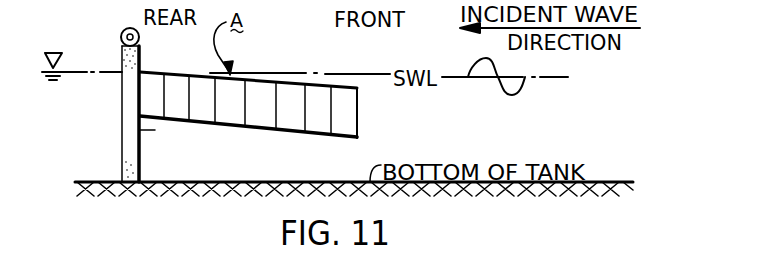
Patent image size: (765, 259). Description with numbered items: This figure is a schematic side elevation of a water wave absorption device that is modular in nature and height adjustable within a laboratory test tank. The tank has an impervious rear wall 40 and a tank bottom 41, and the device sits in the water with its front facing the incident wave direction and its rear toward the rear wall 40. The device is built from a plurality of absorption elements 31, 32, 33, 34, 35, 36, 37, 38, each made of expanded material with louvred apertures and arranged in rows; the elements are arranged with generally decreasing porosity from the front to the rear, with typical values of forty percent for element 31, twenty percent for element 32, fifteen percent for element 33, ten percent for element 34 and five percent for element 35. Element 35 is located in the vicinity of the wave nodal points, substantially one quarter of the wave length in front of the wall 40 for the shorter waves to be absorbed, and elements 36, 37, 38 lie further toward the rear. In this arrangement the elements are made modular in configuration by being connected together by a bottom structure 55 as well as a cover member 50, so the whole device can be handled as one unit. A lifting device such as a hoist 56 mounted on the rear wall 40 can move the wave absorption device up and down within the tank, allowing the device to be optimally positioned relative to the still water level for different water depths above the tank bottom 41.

The rear wall 40 is at (122, 62).
The tank bottom 41 is at (614, 183).
The cover member 50 is at (249, 86).
The bottom structure 55 is at (257, 130).
The hoist 56 is at (140, 33).
The absorption element 31 is at (347, 113).
The absorption element 32 is at (320, 110).
The absorption element 33 is at (292, 108).
The absorption element 34 is at (263, 105).
The absorption element 35 is at (232, 103).
The panel segment 36 is at (204, 100).
The panel segment 37 is at (180, 98).
The panel segment 38 is at (155, 96).